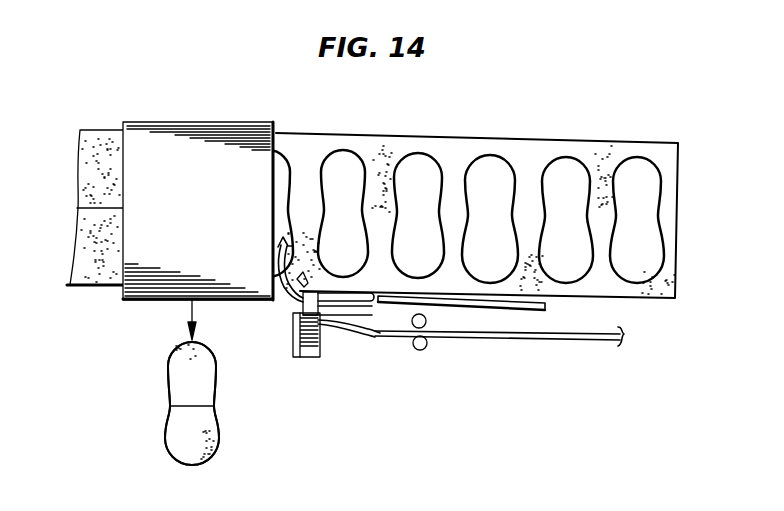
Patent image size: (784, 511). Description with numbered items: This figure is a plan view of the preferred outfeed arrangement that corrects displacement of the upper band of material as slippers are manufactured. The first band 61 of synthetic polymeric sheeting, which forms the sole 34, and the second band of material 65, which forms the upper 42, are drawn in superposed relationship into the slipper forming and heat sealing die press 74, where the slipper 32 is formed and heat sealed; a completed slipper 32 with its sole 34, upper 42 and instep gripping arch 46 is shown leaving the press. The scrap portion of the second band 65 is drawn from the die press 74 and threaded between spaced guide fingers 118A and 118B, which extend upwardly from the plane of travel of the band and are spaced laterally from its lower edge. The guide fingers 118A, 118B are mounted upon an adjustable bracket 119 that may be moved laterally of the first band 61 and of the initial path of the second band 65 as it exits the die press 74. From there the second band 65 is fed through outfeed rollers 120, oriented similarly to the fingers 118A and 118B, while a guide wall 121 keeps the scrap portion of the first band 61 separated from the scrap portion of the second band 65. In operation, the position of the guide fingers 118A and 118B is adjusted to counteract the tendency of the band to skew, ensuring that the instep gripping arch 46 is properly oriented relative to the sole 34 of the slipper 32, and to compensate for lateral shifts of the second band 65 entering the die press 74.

The first band 61 is at (92, 157).
The slipper forming and heat sealing die press 74 is at (210, 153).
The second band of material 65 is at (87, 226).
The guide finger 118A is at (352, 332).
The guide finger 118B is at (367, 302).
The adjustable bracket 119 is at (307, 358).
The outfeed rollers 120 is at (423, 348).
The guide wall 121 is at (546, 309).
The slipper 32 is at (213, 415).
The sole 34 is at (199, 379).
The upper 42 is at (197, 444).
The instep gripping arch 46 is at (185, 404).